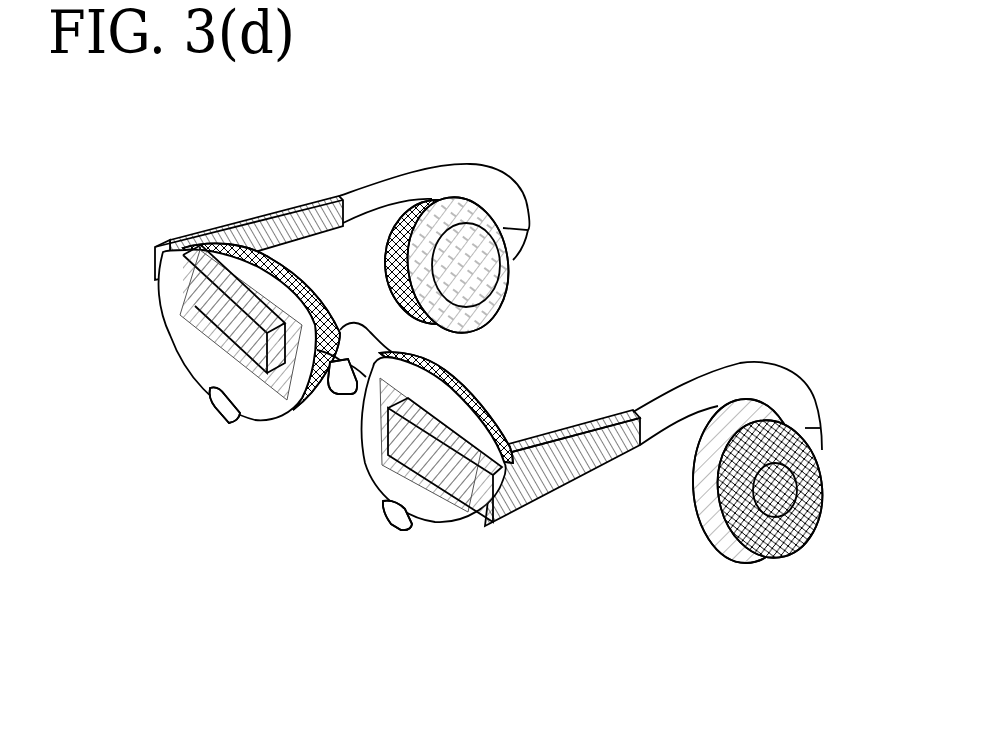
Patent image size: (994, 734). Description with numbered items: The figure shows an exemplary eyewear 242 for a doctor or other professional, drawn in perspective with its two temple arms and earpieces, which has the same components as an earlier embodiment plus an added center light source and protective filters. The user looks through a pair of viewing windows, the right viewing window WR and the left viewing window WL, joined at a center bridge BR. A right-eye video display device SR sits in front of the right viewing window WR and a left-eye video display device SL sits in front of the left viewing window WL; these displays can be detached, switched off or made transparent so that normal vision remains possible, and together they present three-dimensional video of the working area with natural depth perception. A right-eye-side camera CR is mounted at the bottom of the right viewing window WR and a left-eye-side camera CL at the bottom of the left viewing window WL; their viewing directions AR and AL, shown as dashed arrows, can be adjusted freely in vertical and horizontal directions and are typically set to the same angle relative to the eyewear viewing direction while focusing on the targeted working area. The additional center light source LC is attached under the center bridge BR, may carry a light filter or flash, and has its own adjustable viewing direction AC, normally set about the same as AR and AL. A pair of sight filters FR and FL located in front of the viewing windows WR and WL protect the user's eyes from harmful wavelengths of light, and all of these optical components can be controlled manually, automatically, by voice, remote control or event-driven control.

The eyewear 242 is at (383, 200).
The center light source LC is at (349, 375).
The center bridge BR is at (367, 353).
The right viewing window WR is at (225, 318).
The right-eye video display device SR is at (220, 347).
The right sight filter FR is at (186, 362).
The right-eye-side camera CR is at (210, 398).
The viewing direction of the right-eye-side camera AR is at (225, 402).
The viewing direction of the center light source AC is at (340, 395).
The left-eye video display device SL is at (422, 453).
The left-eye-side camera CL is at (385, 505).
The viewing direction of the left-eye-side camera AL is at (400, 515).
The left sight filter FL is at (417, 484).
The left viewing window WL is at (428, 500).